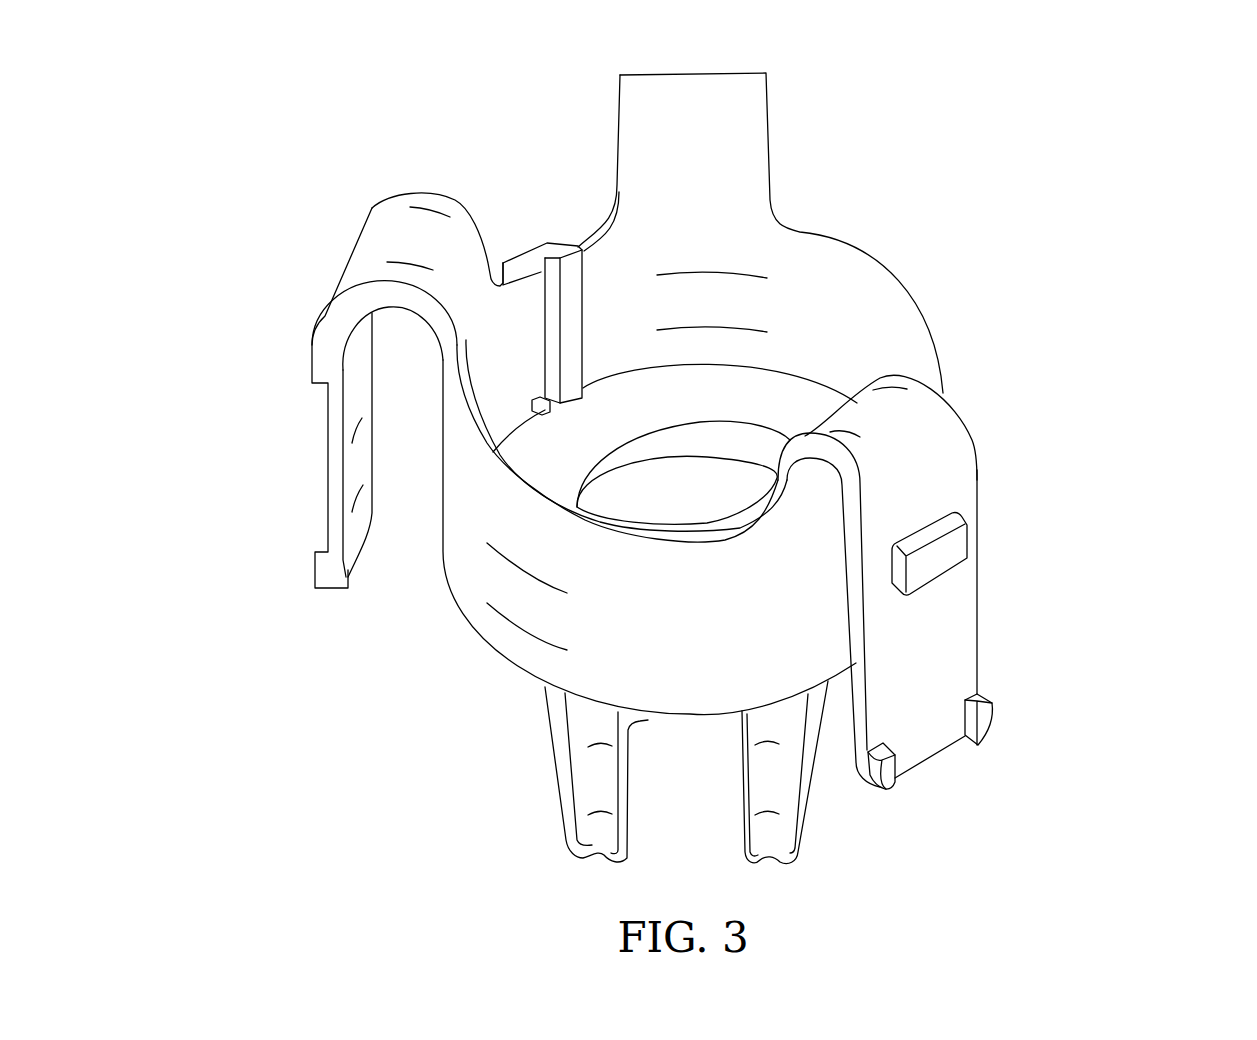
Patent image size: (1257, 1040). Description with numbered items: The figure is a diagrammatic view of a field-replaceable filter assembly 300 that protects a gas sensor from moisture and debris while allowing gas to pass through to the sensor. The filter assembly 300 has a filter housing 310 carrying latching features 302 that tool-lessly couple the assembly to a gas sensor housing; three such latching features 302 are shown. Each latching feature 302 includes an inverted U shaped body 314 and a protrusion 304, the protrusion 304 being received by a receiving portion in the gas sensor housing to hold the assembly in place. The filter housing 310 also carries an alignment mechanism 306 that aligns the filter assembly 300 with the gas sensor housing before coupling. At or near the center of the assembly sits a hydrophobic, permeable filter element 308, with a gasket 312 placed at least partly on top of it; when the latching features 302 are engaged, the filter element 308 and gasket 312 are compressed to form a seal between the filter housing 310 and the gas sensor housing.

The filter assembly 300 is at (1122, 140).
The latching features 302 is at (750, 69).
The protrusion 304 is at (310, 350).
The alignment mechanism 306 is at (568, 290).
The filter element 308 is at (715, 467).
The filter housing 310 is at (677, 652).
The gasket 312 is at (563, 452).
The inverted U shaped body 314 is at (417, 230).